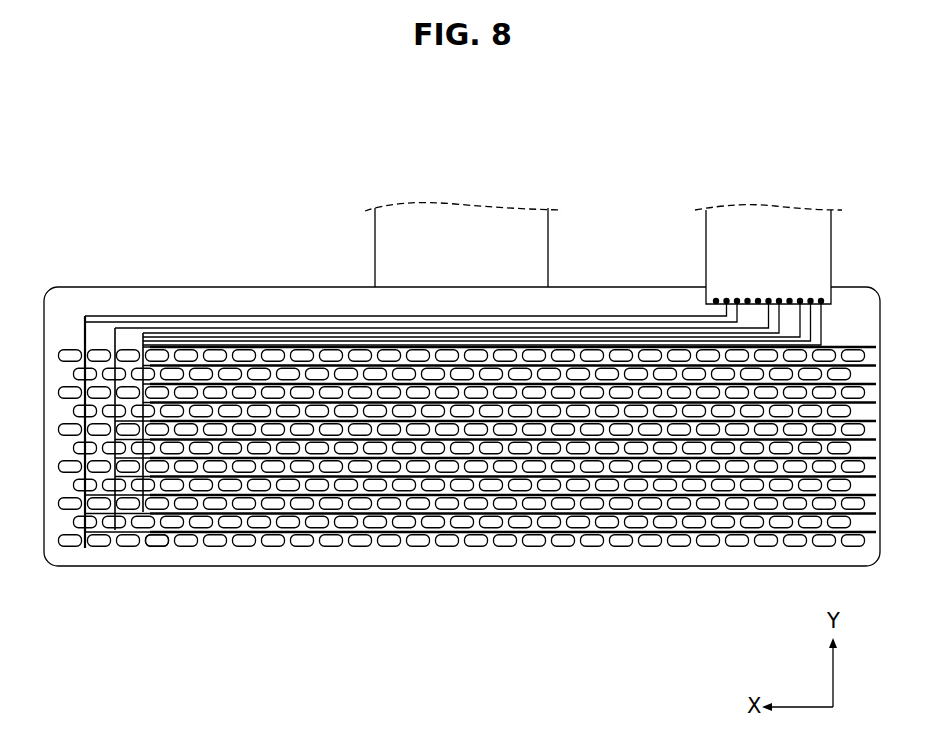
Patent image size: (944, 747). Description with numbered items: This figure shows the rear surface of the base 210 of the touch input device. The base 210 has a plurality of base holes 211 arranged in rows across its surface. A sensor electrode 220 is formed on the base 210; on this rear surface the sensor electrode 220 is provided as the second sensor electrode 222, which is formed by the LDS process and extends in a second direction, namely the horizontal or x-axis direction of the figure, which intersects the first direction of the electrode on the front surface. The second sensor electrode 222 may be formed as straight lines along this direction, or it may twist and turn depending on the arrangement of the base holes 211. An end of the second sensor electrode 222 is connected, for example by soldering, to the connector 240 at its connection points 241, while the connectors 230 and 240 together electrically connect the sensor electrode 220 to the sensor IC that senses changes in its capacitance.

The base 210 is at (282, 170).
The base holes 211 is at (160, 540).
The sensor electrode 220 is at (513, 479).
The second sensor electrode 222 is at (321, 533).
The connector 230 is at (382, 247).
The connector 240 is at (718, 250).
The pad terminals 241 is at (810, 296).